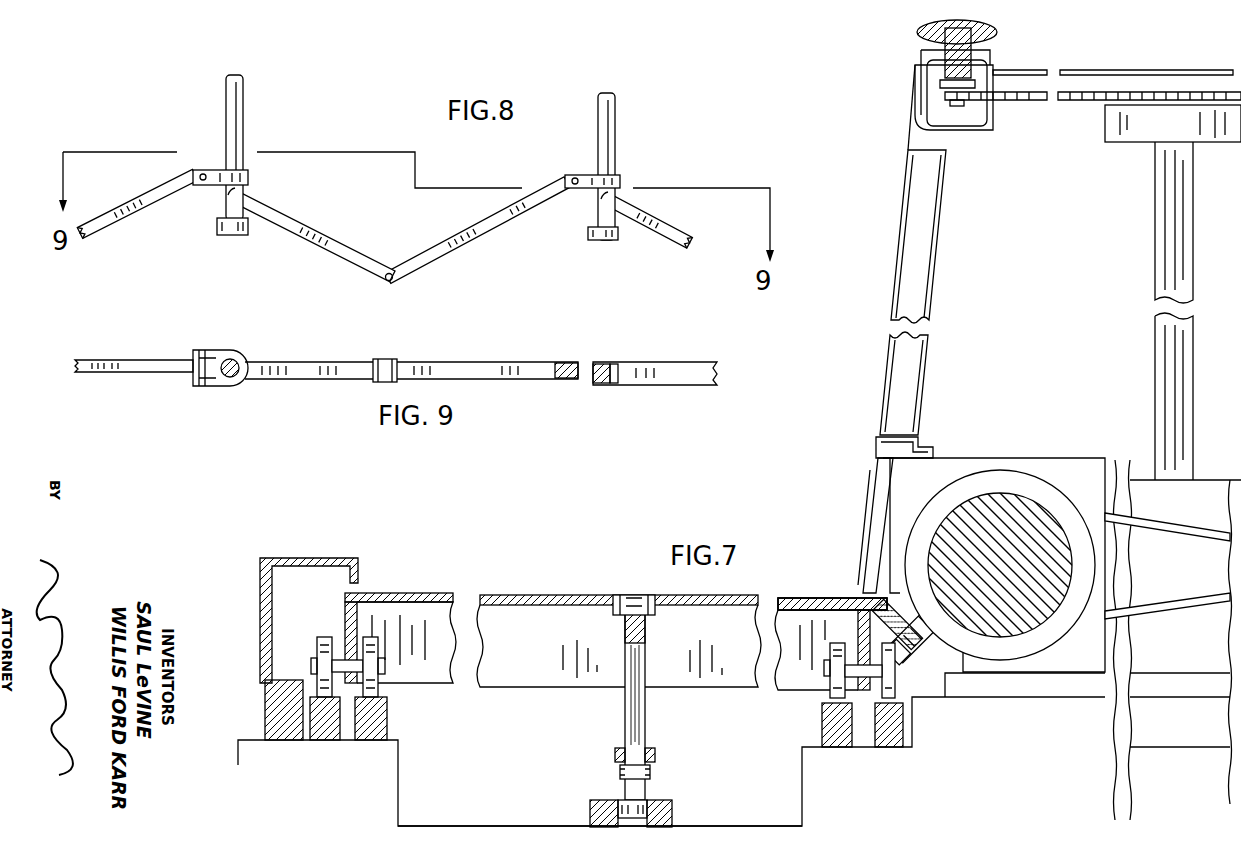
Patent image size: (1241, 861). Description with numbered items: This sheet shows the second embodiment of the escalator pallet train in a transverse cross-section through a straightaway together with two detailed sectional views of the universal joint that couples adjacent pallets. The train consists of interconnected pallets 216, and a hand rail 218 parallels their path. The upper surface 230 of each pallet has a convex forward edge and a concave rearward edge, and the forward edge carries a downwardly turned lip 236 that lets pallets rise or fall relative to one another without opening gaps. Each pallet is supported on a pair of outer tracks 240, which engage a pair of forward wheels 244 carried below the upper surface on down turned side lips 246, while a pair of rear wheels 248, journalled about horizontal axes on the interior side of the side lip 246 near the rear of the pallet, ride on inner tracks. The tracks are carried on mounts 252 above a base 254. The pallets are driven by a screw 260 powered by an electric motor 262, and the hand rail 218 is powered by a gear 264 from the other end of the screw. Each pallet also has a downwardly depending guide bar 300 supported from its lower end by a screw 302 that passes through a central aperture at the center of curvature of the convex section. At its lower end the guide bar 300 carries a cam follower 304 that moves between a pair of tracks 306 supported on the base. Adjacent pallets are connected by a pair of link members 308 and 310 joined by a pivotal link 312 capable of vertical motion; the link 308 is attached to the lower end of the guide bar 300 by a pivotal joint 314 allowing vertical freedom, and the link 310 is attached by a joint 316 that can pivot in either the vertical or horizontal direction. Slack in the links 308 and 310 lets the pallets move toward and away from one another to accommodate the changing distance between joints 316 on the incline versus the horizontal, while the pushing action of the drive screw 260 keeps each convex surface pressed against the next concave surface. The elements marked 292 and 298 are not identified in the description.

In FIG. 7, the pallet 216 is at (503, 590).
In FIG. 7, the hand rail 218 is at (993, 33).
In FIG. 7, the upper surface 230 is at (395, 594).
In FIG. 7, the downwardly turned lip 236 is at (523, 677).
In FIG. 7, the outer track 240 is at (325, 740).
In FIG. 7, the forward wheel 244 is at (330, 626).
In FIG. 7, the down turned side lip 246 is at (380, 628).
In FIG. 7, the rear wheel 248 is at (378, 697).
In FIG. 7, the mount 252 is at (238, 762).
In FIG. 7, the base 254 is at (490, 832).
In FIG. 7, the screw 260 is at (982, 528).
In FIG. 7, the electric motor 262 is at (1208, 482).
In FIG. 7, the gear 264 is at (1015, 100).
In FIG. 7, the block 292 is at (375, 740).
In FIG. 7, the bolt 298 is at (830, 690).
In FIG. 8, the guide bar 300 is at (240, 114).
In FIG. 9, the guide bar 300 is at (237, 355).
In FIG. 7, the guide bar 300 is at (645, 655).
In FIG. 7, the screw 302 is at (617, 618).
In FIG. 8, the cam follower 304 is at (237, 238).
In FIG. 7, the cam follower 304 is at (648, 800).
In FIG. 7, the track 306 is at (590, 803).
In FIG. 8, the link member 308 is at (337, 240).
In FIG. 8, the link member 310 is at (128, 218).
In FIG. 8, the pivotal link 312 is at (395, 284).
In FIG. 8, the pivotal joint 314 is at (242, 194).
In FIG. 7, the pivotal joint 314 is at (650, 770).
In FIG. 8, the joint 316 is at (218, 168).
In FIG. 7, the joint 316 is at (617, 750).